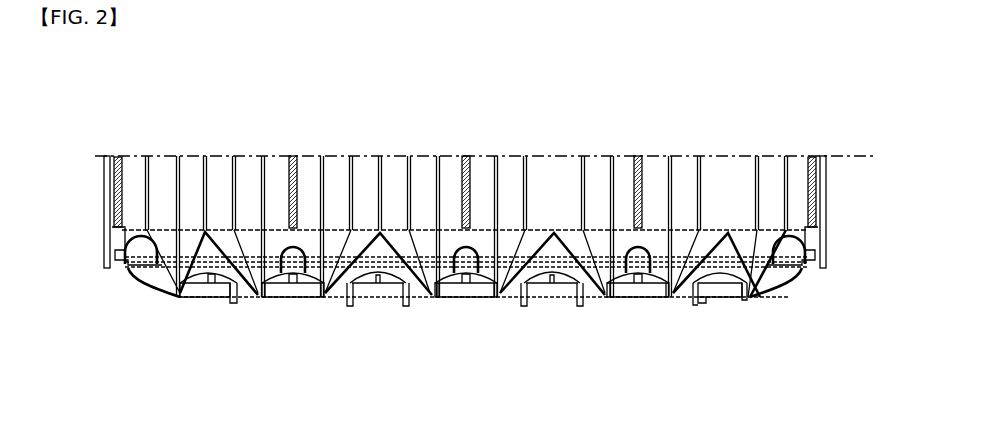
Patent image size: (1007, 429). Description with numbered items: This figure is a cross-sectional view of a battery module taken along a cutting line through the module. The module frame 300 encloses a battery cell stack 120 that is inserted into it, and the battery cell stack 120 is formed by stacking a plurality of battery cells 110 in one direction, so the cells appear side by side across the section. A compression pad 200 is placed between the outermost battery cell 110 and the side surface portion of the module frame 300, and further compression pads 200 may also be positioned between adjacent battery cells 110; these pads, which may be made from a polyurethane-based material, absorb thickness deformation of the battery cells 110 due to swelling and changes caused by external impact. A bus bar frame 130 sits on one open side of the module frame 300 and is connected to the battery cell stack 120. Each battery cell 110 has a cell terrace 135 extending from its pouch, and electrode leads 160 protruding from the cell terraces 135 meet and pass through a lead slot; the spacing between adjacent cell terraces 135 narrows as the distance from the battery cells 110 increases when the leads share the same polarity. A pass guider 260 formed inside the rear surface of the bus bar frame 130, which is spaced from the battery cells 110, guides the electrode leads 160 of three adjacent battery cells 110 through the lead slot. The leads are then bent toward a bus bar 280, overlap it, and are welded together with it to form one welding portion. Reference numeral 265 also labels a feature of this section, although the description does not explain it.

The battery cell 110 is at (565, 178).
The battery cell stack 120 is at (688, 135).
The bus bar frame 130 is at (782, 293).
The cell terrace 135 is at (199, 158).
The electrode lead 160 is at (207, 297).
The compression pad 200 is at (115, 155).
The pass guider 260 is at (217, 292).
The support rib 265 is at (366, 158).
The bus bar 280 is at (207, 292).
The module frame 300 is at (110, 155).